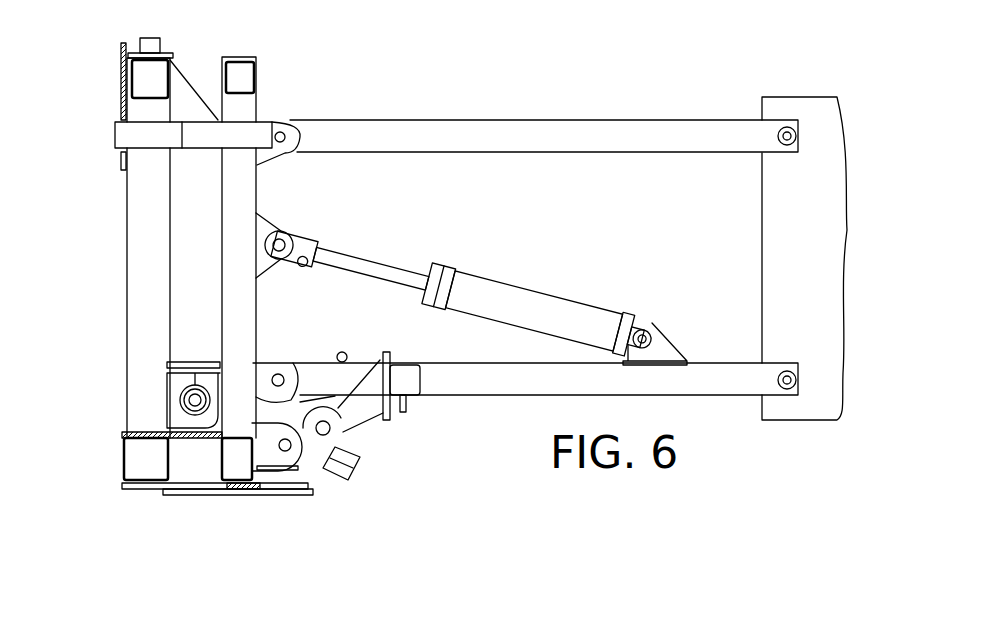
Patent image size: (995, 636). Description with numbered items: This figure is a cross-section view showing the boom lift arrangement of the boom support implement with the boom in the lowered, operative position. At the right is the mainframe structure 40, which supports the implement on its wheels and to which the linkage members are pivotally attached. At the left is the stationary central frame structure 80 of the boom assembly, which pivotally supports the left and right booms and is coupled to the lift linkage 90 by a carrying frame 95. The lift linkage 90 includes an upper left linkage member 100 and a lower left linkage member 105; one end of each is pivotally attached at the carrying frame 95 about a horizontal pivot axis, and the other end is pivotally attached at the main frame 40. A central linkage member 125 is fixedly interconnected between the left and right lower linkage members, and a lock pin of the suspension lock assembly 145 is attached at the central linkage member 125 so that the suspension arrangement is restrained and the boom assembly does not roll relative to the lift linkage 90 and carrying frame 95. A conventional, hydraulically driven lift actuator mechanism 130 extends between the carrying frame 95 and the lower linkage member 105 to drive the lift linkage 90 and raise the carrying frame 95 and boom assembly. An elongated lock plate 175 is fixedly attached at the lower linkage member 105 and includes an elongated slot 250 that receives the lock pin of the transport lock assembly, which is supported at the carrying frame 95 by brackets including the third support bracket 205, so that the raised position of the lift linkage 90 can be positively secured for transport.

The mainframe structure 40 is at (809, 80).
The stationary central frame structure 80 is at (117, 263).
The lift linkage 90 is at (541, 82).
The carrying frame 95 is at (210, 299).
The upper left linkage member 100 is at (653, 117).
The lower left linkage member 105 is at (474, 397).
The central linkage member 125 is at (426, 380).
The lift actuator mechanism 130 is at (533, 279).
The suspension lock assembly 145 is at (341, 503).
The lock plate 175 is at (312, 445).
The third support bracket 205 is at (260, 420).
The elongated slot 250 is at (312, 451).